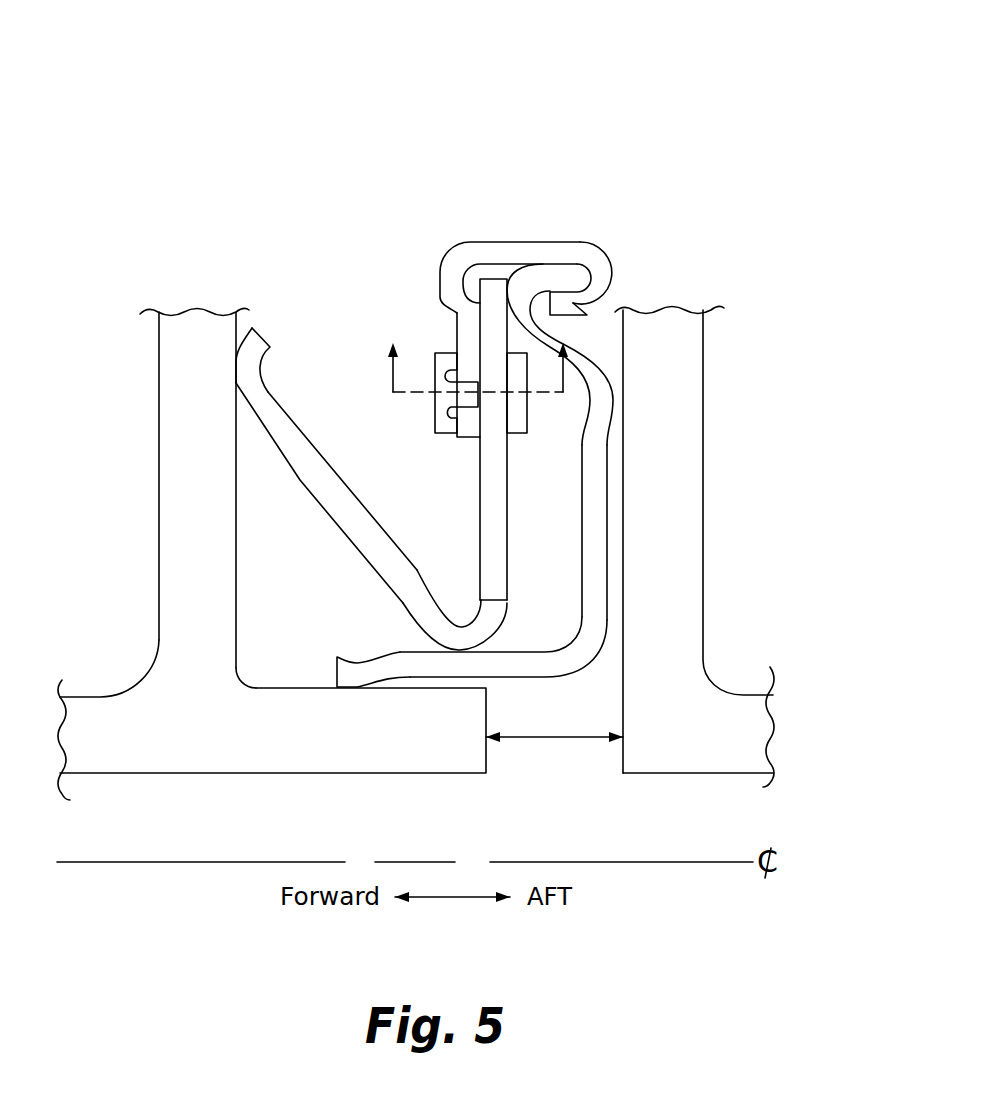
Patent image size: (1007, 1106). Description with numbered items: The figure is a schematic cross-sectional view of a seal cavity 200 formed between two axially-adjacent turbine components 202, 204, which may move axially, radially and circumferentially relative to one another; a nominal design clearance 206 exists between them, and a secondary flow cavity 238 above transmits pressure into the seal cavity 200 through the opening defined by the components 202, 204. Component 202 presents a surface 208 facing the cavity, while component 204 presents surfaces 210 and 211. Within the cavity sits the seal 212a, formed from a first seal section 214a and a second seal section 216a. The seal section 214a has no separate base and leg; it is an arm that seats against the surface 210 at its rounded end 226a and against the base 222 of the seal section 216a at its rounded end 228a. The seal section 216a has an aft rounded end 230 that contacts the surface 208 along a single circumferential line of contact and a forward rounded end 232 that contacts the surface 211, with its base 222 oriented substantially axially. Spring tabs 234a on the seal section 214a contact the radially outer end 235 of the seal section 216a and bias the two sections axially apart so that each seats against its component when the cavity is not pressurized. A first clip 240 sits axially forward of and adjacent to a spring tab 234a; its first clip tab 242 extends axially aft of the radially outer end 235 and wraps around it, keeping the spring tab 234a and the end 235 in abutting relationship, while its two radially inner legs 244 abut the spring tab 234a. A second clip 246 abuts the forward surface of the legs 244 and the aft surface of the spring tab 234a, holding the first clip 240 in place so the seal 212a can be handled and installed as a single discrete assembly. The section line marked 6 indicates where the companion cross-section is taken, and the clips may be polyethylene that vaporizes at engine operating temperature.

The secondary flow cavity 238 is at (382, 45).
The seal cavity 200 is at (641, 262).
The turbine component 202 is at (683, 773).
The turbine component 204 is at (402, 775).
The nominal design clearance 206 is at (547, 738).
The surface 208 is at (617, 327).
The surface 210 is at (240, 317).
The surface 211 is at (283, 690).
The seal 212a is at (388, 226).
The seal section 214a is at (336, 532).
The seal section 216a is at (609, 507).
The base 222 is at (505, 652).
The rounded end 226a is at (235, 372).
The rounded end 228a is at (460, 655).
The aft substantially rounded end 230 is at (623, 393).
The forward substantially rounded end 232 is at (363, 688).
The spring tab 234a is at (480, 537).
The radially outer end 235 is at (520, 310).
The first clip 240 is at (490, 242).
The first clip tab 242 is at (573, 303).
The radially inner legs 244 is at (445, 352).
The second clip 246 is at (436, 412).
The section line 6- 6 is at (479, 373).